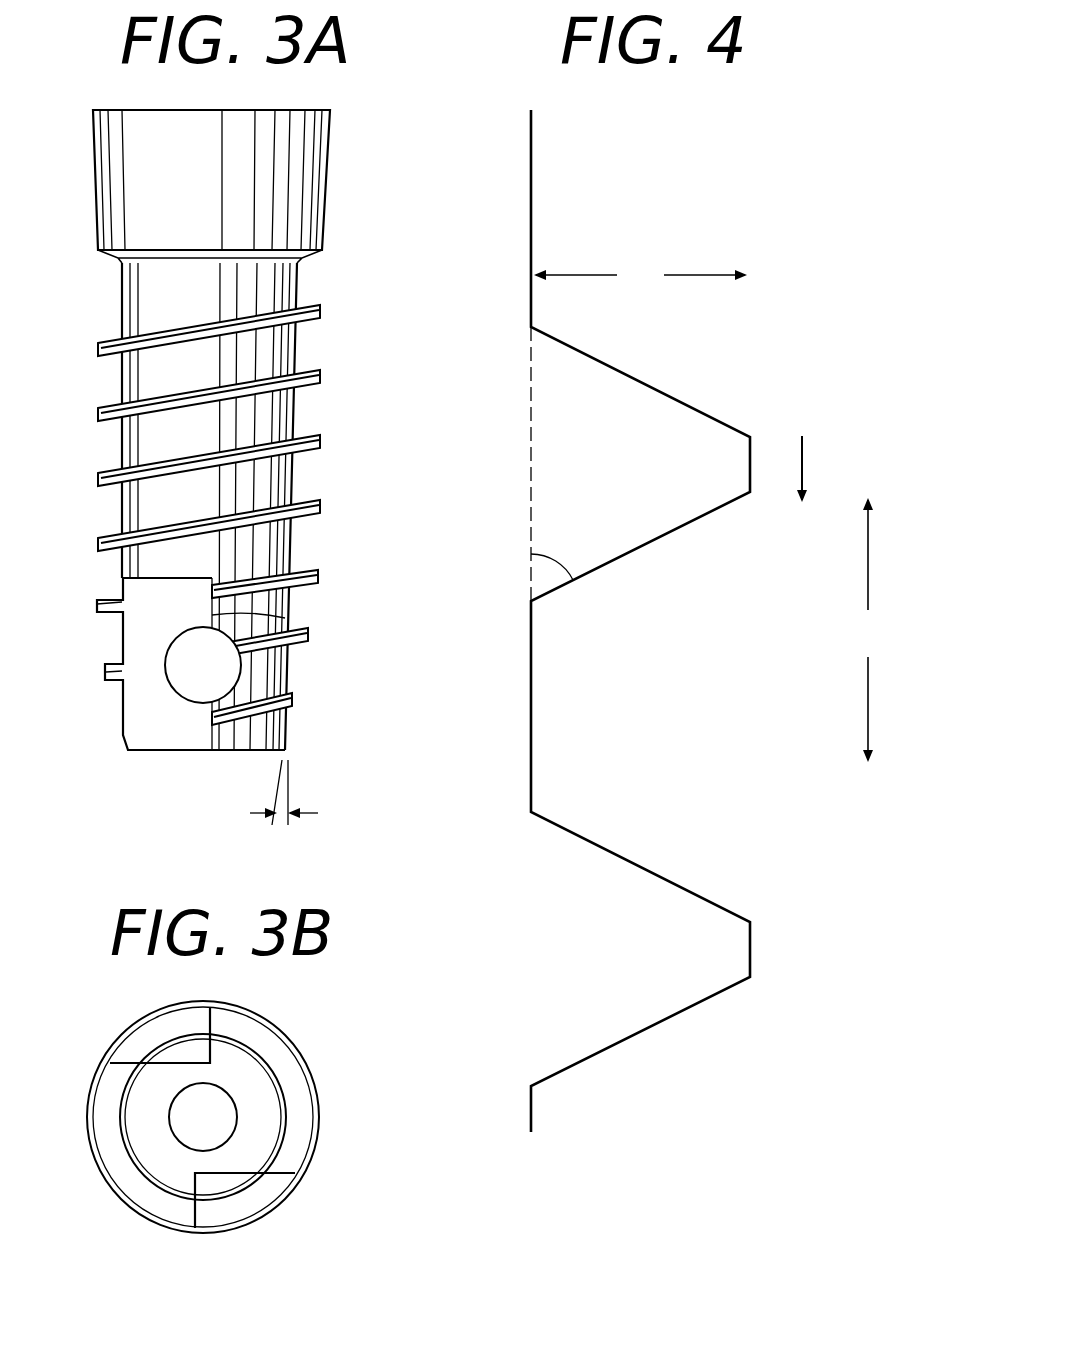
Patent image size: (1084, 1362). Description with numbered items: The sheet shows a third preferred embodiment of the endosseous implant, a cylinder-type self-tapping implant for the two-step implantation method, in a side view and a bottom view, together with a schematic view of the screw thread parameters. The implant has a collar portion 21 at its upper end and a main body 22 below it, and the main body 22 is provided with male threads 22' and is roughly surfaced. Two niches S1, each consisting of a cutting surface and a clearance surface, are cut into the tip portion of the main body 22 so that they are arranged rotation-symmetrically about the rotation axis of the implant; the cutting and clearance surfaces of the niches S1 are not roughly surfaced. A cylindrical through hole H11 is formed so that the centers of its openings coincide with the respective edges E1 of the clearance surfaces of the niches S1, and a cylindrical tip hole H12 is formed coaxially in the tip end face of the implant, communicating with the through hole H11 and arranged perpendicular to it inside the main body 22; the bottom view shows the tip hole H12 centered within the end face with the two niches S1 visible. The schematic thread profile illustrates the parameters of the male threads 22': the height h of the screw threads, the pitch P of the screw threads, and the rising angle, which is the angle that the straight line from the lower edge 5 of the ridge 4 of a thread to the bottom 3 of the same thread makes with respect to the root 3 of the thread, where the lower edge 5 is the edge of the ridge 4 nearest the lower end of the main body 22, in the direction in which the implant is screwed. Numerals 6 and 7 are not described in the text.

In FIG. 3A, the collar portion 21 is at (296, 187).
In FIG. 3A, the main body 22 is at (249, 509).
In FIG. 3A, the male threads 22' is at (352, 396).
In FIG. 3A, the edge of clearance surface E1 is at (290, 608).
In FIG. 3A, the through hole H11 is at (222, 668).
In FIG. 3A, the niche S1 is at (138, 680).
In FIG. 3B, the niche S1 is at (336, 1201).
In FIG. 3B, the tip hole H12 is at (222, 1117).
In FIG. 4, the bottom of screw thread 3 is at (533, 441).
In FIG. 4, the ridge of screw thread 4 is at (748, 457).
In FIG. 4, the lower edge of ridge 5 is at (750, 493).
In FIG. 4, the thread root 6 is at (533, 602).
In FIG. 4, the direction of insertion 7 is at (805, 470).
In FIG. 4, the height of screw threads h is at (640, 275).
In FIG. 4, the pitch of screw threads P is at (867, 630).